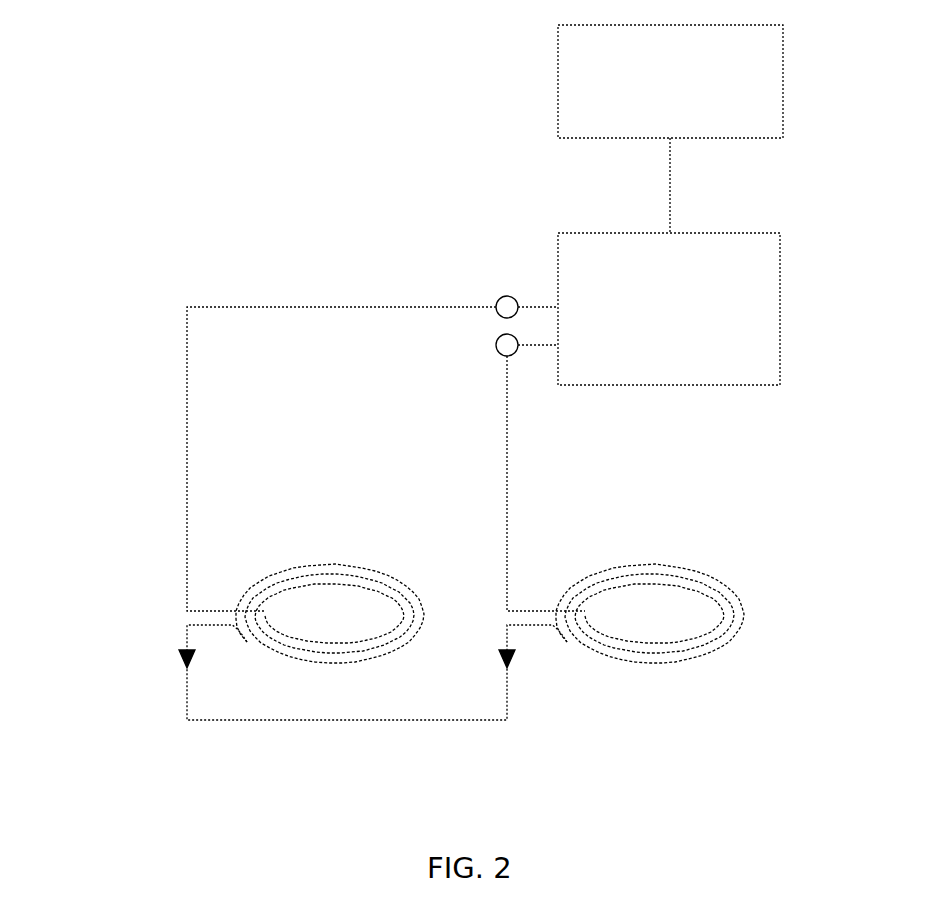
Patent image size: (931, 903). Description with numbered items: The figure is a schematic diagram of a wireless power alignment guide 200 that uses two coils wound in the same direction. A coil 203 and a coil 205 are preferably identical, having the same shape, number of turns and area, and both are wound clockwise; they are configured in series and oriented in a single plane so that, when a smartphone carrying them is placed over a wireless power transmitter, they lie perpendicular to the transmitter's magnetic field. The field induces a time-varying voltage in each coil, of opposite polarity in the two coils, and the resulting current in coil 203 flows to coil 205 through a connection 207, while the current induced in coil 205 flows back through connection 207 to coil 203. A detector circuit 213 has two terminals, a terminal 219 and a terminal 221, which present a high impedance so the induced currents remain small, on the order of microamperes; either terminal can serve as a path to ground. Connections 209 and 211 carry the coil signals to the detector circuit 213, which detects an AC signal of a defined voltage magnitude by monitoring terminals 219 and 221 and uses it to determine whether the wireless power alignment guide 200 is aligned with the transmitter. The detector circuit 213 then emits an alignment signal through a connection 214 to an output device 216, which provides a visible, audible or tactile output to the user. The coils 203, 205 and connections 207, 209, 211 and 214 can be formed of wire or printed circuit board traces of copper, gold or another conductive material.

The wireless power alignment guide 200 is at (152, 371).
The coil 203 is at (352, 668).
The coil 205 is at (672, 668).
The connection 207 is at (509, 688).
The connection 209 is at (188, 427).
The connection 211 is at (508, 427).
The detector circuit 213 is at (690, 386).
The connection 214 is at (668, 180).
The output device 216 is at (557, 86).
The terminal 219 is at (500, 297).
The terminal 221 is at (497, 347).